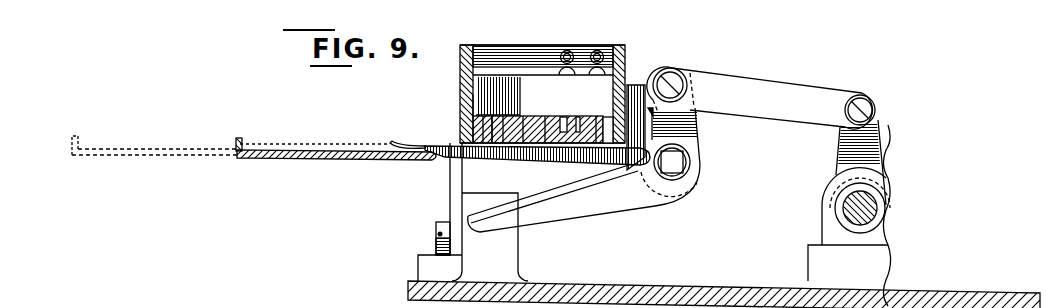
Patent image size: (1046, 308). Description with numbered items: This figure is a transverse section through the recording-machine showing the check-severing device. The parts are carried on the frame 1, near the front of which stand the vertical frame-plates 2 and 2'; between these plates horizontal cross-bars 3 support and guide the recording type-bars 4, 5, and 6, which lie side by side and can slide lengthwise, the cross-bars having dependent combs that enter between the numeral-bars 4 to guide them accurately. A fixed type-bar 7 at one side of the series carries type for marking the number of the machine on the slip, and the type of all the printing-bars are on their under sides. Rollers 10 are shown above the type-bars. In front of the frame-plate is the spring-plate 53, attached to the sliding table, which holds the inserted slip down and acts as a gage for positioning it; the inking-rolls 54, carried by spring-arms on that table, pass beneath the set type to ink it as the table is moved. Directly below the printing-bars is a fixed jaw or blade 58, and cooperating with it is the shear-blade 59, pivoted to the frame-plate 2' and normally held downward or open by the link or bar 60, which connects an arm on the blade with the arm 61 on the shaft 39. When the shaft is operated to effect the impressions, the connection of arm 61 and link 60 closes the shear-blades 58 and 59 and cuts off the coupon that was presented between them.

The frame 1 is at (749, 288).
The vertical frame-plate 2 is at (521, 163).
The vertical frame-plate 2' is at (639, 111).
The cross-bar 3 is at (540, 116).
The numeral type-bar 4 is at (594, 116).
The type-bar 5 is at (492, 116).
The type-bar 6 is at (563, 117).
The fixed type-bar 7 is at (462, 112).
The rollers 10 is at (595, 50).
The shaft 39 is at (845, 210).
The spring-plate 53 is at (412, 140).
The inking-roll 54 is at (345, 160).
The fixed jaw or blade 58 is at (537, 165).
The shear-blade 59 is at (606, 204).
The link or bar 60 is at (765, 88).
The arm 61 is at (840, 150).